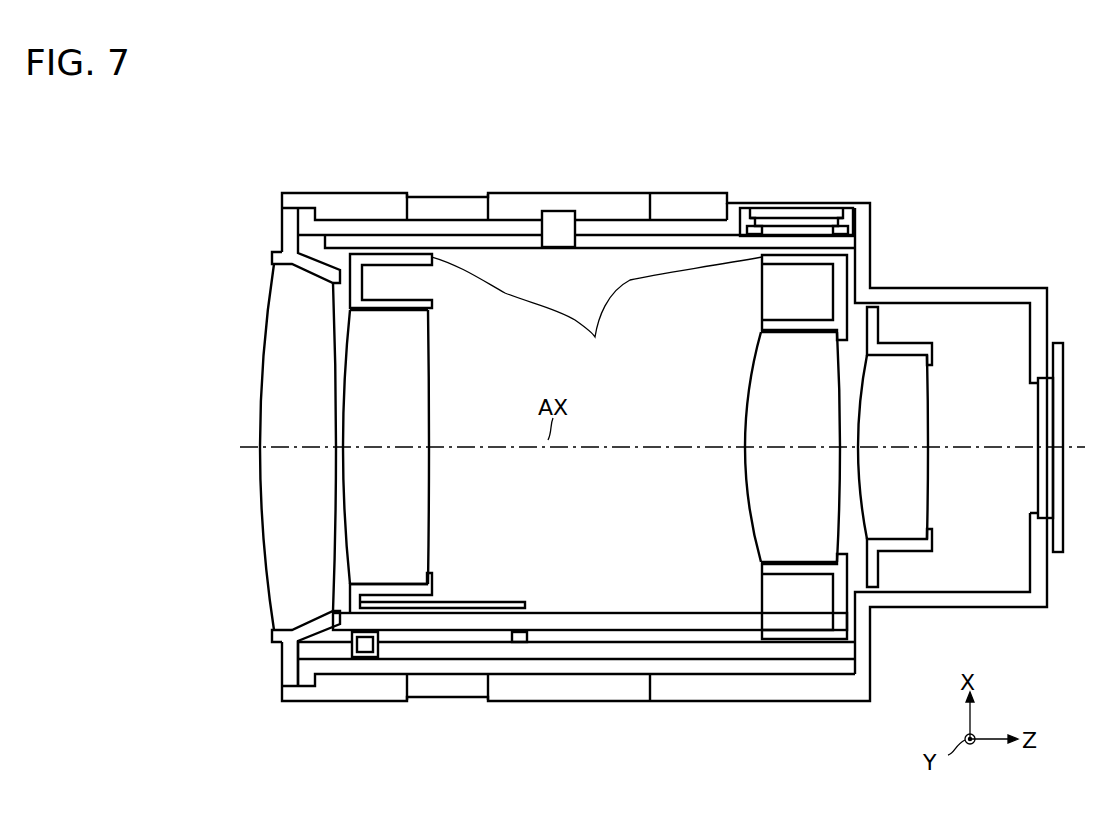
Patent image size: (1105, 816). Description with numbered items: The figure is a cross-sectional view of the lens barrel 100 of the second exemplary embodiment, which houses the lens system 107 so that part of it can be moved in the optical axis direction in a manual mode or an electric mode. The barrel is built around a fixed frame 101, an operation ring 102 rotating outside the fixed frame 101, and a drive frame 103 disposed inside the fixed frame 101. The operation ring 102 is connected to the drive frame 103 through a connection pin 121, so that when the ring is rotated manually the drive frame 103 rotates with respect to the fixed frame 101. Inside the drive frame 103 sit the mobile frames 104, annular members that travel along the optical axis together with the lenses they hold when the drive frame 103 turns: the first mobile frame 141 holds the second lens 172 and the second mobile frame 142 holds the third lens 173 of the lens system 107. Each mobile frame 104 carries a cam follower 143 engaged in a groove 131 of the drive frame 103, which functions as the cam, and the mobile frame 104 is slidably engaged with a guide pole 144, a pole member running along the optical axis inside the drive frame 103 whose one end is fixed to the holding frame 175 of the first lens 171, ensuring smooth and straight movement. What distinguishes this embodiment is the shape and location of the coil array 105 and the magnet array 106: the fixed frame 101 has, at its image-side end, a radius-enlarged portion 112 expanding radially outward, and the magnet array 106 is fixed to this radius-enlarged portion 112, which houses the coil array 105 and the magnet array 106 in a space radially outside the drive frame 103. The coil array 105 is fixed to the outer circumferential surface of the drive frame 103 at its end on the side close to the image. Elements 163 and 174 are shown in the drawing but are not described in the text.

The lens barrel 100 is at (971, 121).
The fixed frame 101 is at (672, 218).
The operation ring 102 is at (603, 194).
The drive frame 103 is at (516, 243).
The mobile frame 104 is at (613, 369).
The coil array 105 is at (848, 231).
The magnet array 106 is at (828, 222).
The lens system 107 is at (277, 280).
The radius-enlarged portion 112 is at (741, 208).
The connection pin 121 is at (563, 220).
The groove 131 is at (368, 660).
The first mobile frame 141 is at (438, 308).
The second mobile frame 142 is at (762, 321).
The cam follower 143 is at (368, 638).
The guide pole 144 is at (569, 612).
The drive coil 163 is at (798, 211).
The first lens 171 is at (318, 525).
The second lens 172 is at (405, 525).
The third lens 173 is at (815, 526).
The fourth lens 174 is at (913, 524).
The holding frame 175 is at (290, 660).